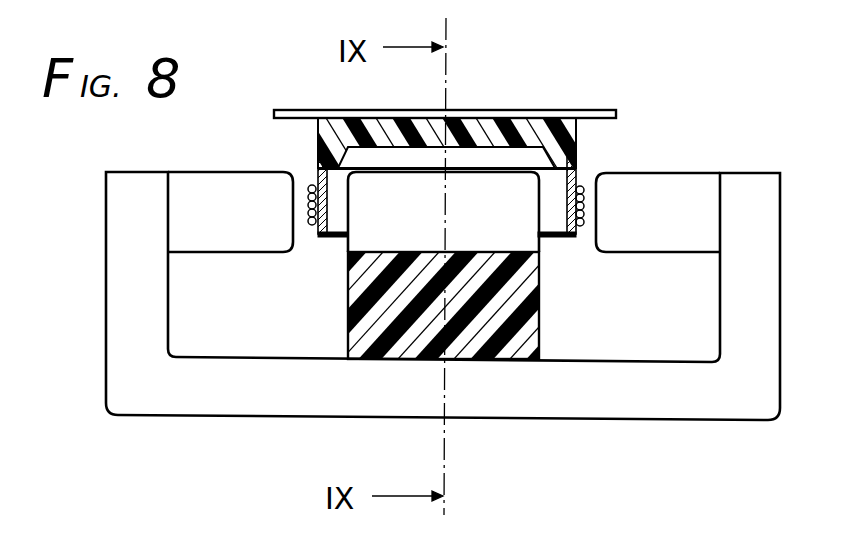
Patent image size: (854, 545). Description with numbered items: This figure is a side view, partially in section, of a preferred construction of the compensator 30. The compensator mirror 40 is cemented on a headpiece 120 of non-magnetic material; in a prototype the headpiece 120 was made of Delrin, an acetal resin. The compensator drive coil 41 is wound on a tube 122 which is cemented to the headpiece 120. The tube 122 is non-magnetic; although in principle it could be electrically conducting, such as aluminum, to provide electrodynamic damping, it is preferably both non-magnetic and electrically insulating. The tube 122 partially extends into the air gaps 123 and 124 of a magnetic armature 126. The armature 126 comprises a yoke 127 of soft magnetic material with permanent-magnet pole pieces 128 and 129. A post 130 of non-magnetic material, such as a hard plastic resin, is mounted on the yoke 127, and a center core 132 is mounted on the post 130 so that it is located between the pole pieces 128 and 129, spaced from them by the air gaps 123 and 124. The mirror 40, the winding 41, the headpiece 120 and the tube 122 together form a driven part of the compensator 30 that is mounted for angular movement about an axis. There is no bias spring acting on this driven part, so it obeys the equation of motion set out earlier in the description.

The compensator 30 is at (237, 344).
The compensator mirror 40 is at (586, 109).
The compensator drive coil 41 is at (580, 236).
The headpiece 120 is at (317, 130).
The tube 122 is at (338, 236).
The air gap 123 is at (302, 186).
The air gap 124 is at (590, 184).
The magnetic armature 126 is at (122, 293).
The yoke 127 is at (338, 404).
The permanent-magnet pole piece 128 is at (236, 241).
The permanent-magnet pole piece 129 is at (684, 246).
The post 130 is at (348, 332).
The center core 132 is at (407, 229).